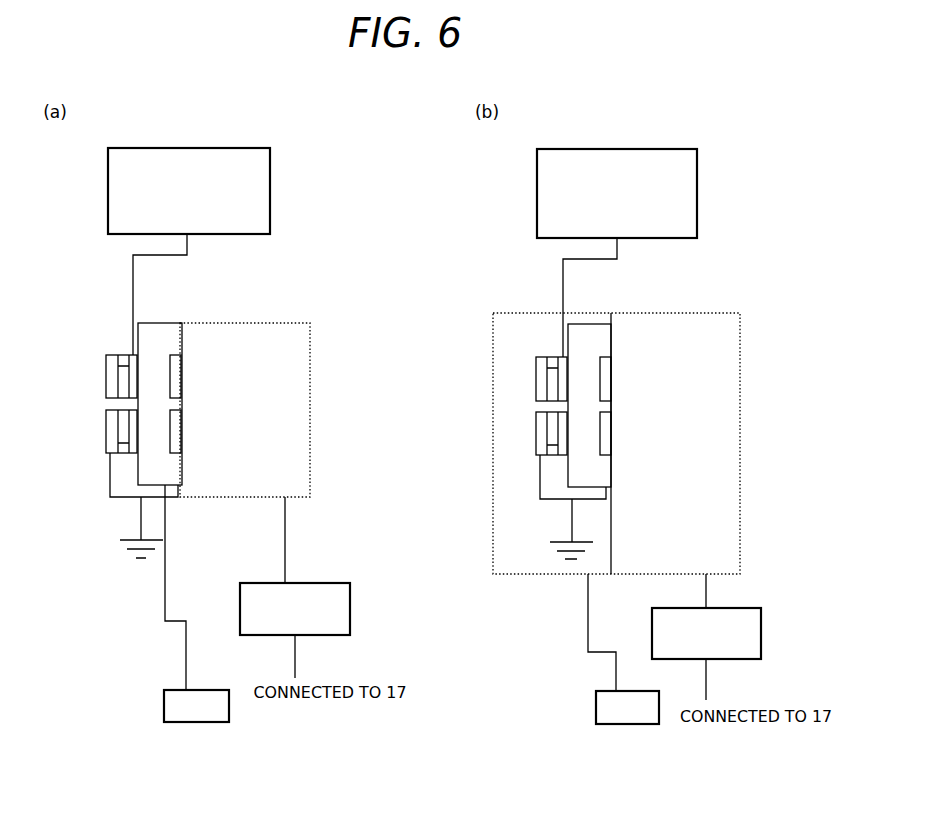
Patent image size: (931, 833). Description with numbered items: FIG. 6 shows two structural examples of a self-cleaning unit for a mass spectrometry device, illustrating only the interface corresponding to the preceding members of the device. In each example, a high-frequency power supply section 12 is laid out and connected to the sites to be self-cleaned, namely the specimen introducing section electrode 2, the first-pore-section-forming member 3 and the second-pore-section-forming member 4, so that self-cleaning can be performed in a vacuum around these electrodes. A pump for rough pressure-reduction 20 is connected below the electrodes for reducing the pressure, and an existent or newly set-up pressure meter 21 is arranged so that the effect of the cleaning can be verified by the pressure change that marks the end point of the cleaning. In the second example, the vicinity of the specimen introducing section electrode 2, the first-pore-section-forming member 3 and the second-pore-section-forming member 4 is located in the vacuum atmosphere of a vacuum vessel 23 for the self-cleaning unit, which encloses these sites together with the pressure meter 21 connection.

The high-frequency power supply section 12 is at (215, 148).
The specimen introducing section electrode 2 is at (107, 374).
The first-pore-section-forming member 3 is at (130, 421).
The second-pore-section-forming member 4 is at (177, 424).
The pump for rough pressure-reduction 20 is at (197, 722).
The pressure meter 21 is at (302, 583).
The vacuum vessel for the self-cleaning unit 23 is at (512, 533).